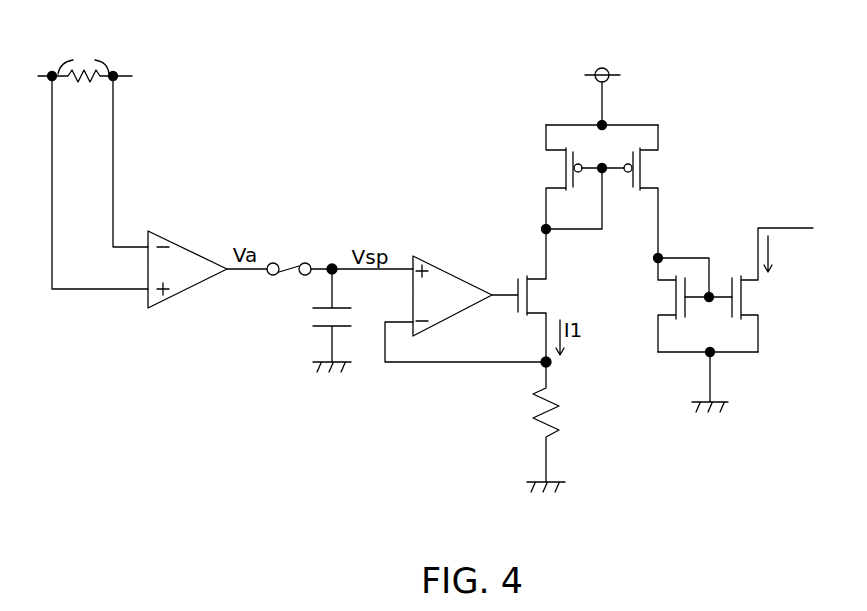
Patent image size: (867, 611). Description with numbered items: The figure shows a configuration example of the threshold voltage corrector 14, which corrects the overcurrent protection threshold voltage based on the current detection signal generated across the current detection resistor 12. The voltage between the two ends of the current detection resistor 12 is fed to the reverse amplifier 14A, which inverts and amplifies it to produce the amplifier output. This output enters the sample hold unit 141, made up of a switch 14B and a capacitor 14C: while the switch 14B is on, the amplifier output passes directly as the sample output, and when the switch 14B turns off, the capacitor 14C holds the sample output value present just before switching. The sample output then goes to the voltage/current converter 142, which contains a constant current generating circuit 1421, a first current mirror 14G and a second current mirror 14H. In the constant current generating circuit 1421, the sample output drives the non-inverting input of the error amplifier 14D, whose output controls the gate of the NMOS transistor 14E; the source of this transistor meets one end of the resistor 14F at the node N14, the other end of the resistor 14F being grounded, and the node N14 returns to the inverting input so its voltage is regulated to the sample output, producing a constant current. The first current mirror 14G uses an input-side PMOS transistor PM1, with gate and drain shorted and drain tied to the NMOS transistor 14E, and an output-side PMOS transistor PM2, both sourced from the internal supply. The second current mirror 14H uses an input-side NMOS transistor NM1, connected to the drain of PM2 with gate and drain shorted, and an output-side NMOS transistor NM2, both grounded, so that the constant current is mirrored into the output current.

The current detection resistor 12 is at (93, 86).
The threshold voltage corrector 14 is at (250, 135).
The reverse amplifier 14A is at (173, 241).
The switch 14B is at (292, 280).
The capacitor 14C is at (312, 318).
The error amplifier 14D is at (436, 264).
The NMOS transistor 14E is at (546, 287).
The resistor 14F is at (566, 398).
The first current mirror 14G is at (668, 138).
The second current mirror 14H is at (710, 320).
The sample hold unit 141 is at (328, 250).
The voltage/current converter 142 is at (585, 163).
The constant current generating circuit 1421 is at (437, 378).
The PMOS transistor PM1 is at (546, 163).
The PMOS transistor PM2 is at (666, 160).
The NMOS transistor NM1 is at (660, 291).
The NMOS transistor NM2 is at (760, 295).
The node N14 is at (543, 368).